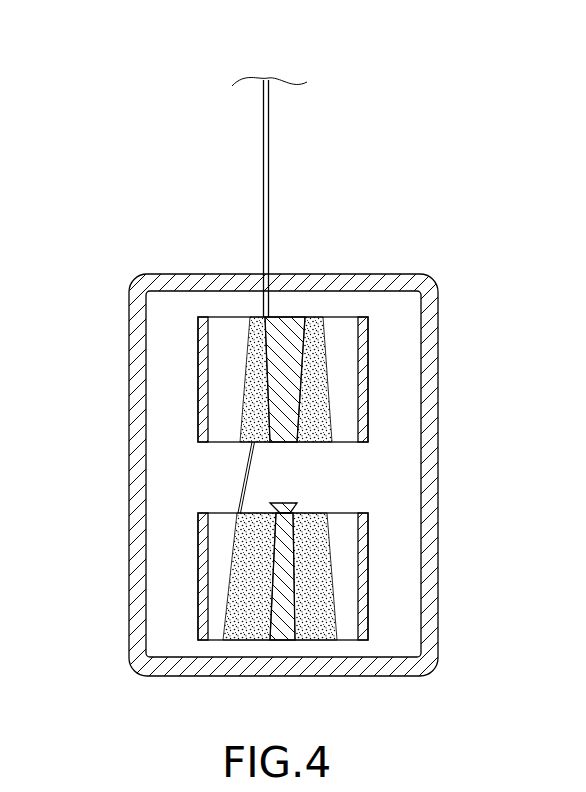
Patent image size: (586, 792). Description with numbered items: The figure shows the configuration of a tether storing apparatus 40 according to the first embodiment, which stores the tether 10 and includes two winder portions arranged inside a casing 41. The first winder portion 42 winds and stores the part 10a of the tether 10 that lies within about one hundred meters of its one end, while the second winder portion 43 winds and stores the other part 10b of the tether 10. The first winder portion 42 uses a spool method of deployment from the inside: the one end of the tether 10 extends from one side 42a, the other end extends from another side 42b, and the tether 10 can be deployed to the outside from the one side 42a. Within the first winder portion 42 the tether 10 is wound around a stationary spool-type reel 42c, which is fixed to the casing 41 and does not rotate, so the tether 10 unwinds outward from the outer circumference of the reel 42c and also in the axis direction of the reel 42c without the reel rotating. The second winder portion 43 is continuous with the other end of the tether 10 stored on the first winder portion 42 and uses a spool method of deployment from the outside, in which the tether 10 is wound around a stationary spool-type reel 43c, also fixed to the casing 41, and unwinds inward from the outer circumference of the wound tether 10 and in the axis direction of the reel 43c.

The tether 10 is at (269, 186).
The part of the tether 10a is at (320, 345).
The other part of the tether 10b is at (328, 550).
The tether storing apparatus 40 is at (298, 377).
The casing 41 is at (438, 295).
The first winder portion 42 is at (294, 355).
The one side 42a is at (319, 310).
The another side 42b is at (214, 459).
The reel 42c is at (325, 430).
The second winder portion 43 is at (348, 577).
The reel 43c is at (300, 613).